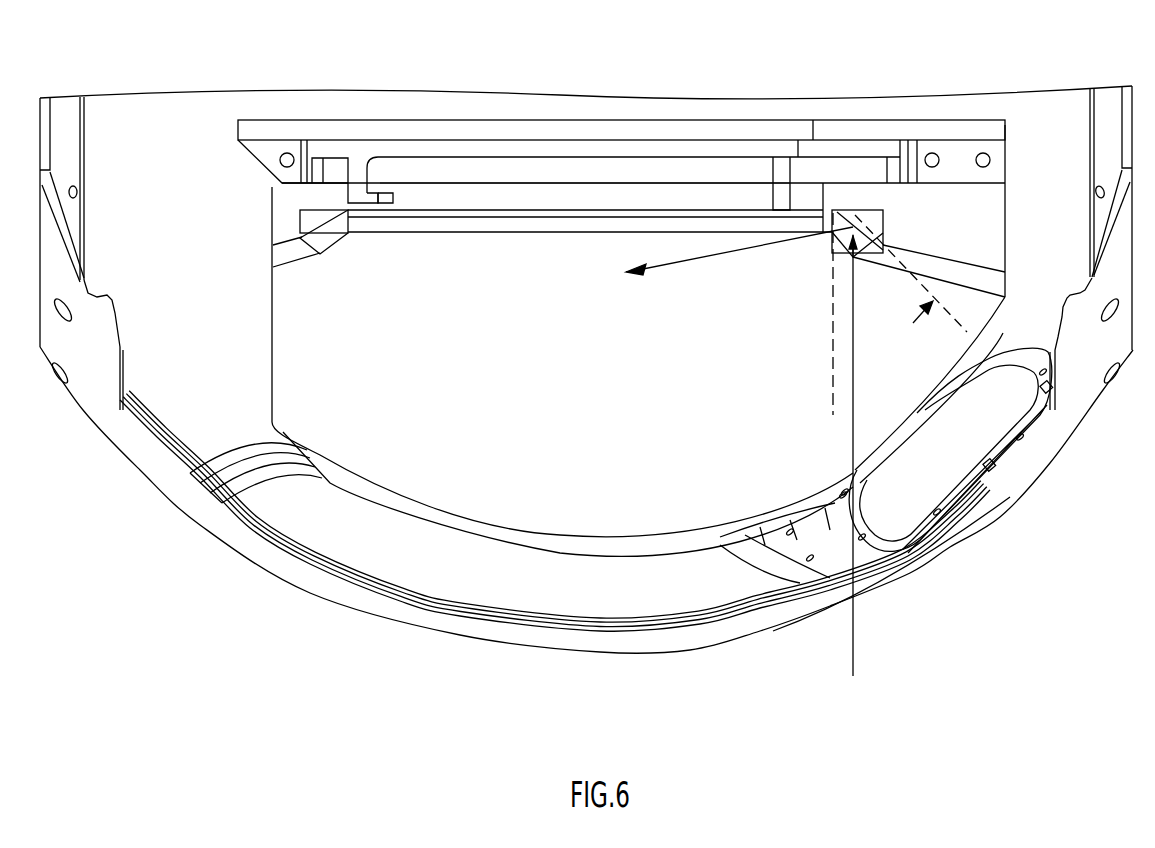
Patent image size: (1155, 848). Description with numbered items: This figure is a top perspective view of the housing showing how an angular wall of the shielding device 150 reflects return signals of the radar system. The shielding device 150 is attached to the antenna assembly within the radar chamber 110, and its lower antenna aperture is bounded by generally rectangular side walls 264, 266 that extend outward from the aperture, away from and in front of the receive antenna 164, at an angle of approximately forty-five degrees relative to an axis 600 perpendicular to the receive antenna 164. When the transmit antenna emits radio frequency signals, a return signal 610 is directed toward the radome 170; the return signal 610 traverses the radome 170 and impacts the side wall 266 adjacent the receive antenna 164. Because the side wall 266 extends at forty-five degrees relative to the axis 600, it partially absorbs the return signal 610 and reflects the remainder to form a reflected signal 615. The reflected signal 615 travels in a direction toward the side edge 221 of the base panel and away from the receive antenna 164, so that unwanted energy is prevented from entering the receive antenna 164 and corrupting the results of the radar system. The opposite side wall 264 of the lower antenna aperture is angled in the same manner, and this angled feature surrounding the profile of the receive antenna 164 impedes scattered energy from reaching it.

The radar chamber 110 is at (189, 580).
The shielding device 150 is at (243, 208).
The receive antenna 164 is at (580, 175).
The radome 170 is at (960, 508).
The side edge 221 is at (272, 360).
The side wall 264 is at (310, 218).
The side wall 266 is at (866, 220).
The axis 600 is at (833, 312).
The return signal 610 is at (853, 418).
The reflected signal 615 is at (733, 252).